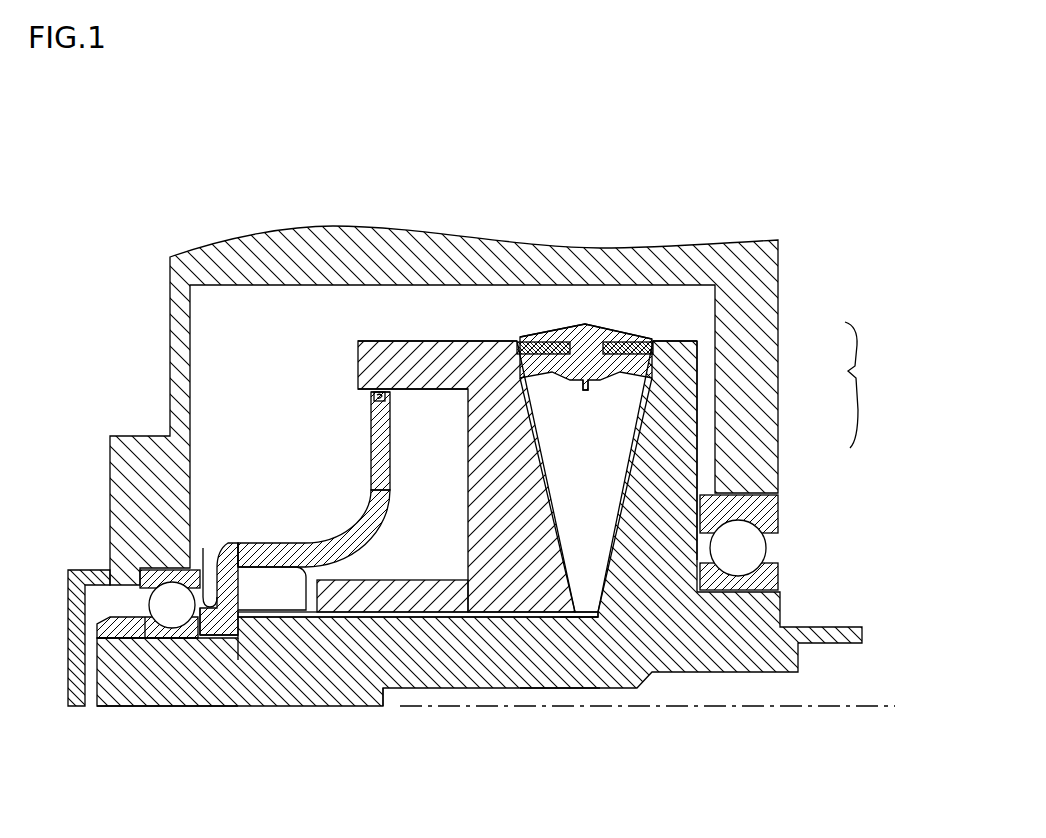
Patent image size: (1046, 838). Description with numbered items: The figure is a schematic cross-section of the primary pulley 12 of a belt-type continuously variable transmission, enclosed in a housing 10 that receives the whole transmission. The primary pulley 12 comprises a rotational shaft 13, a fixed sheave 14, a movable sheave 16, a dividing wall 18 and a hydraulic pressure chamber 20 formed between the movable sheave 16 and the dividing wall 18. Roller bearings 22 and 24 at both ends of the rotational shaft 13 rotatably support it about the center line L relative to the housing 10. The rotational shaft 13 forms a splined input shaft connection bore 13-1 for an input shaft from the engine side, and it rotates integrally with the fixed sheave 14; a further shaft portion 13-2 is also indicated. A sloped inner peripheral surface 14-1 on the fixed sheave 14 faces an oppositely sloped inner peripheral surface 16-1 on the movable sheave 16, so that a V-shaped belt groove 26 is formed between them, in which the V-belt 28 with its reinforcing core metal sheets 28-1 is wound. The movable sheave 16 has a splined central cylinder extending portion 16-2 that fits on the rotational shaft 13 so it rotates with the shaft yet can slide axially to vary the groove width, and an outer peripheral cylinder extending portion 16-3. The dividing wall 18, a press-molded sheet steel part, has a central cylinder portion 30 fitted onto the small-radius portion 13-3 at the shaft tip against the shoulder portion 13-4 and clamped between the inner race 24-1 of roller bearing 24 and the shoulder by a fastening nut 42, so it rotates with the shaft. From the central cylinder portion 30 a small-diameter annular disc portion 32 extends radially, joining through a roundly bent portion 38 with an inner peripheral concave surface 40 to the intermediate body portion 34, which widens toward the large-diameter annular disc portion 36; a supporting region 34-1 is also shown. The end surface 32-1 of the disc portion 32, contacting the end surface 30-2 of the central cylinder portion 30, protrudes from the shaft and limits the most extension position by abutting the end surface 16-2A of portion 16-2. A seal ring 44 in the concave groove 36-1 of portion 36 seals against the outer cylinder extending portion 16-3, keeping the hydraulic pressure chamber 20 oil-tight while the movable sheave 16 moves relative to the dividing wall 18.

The housing 10 is at (692, 250).
The primary pulley 12 is at (898, 384).
The rotational shaft 13 is at (533, 633).
The input shaft connection bore 13-1 is at (548, 690).
The shaft second portion 13-2 is at (582, 617).
The small-radius portion 13-3 is at (178, 688).
The shoulder portion 13-4 is at (233, 647).
The fixed sheave 14 is at (665, 433).
The inner peripheral surface 14-1 is at (627, 397).
The movable sheave 16 is at (517, 480).
The inner peripheral surface 16-1 is at (538, 395).
The central cylinder extending portion 16-2 is at (415, 640).
The end surface 16-2A is at (383, 706).
The outer peripheral cylinder extending portion 16-3 is at (408, 345).
The dividing wall 18 is at (637, 500).
The hydraulic pressure chamber 20 is at (690, 397).
The roller bearing 22 is at (755, 550).
The roller bearing 24 is at (165, 607).
The inner race 24-1 is at (157, 637).
The belt groove 26 is at (610, 456).
The V-belt 28 is at (586, 333).
The core metal sheets 28-1 is at (585, 388).
The central cylinder portion 30 is at (206, 598).
The end surface 30-2 is at (290, 643).
The small-diameter annular disc portion 32 is at (218, 550).
The end surface 32-1 is at (277, 633).
The intermediate body portion 34 is at (300, 540).
The support plate 34-1 is at (320, 580).
The large-diameter annular disc portion 36 is at (370, 452).
The concave groove 36-1 is at (386, 402).
The bent portion 38 is at (240, 545).
The inner peripheral concave surface 40 is at (250, 592).
The fastening nut 42 is at (112, 640).
The seal ring 44 is at (376, 388).
The center line L is at (820, 706).